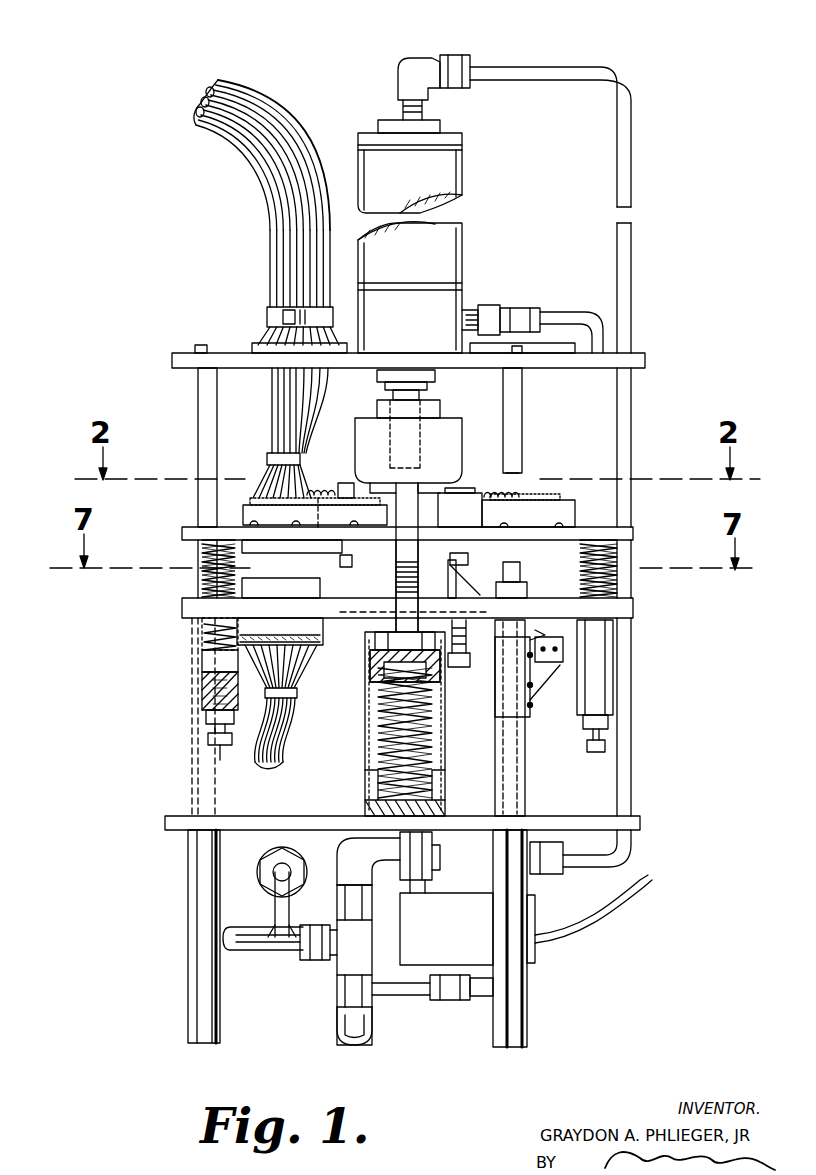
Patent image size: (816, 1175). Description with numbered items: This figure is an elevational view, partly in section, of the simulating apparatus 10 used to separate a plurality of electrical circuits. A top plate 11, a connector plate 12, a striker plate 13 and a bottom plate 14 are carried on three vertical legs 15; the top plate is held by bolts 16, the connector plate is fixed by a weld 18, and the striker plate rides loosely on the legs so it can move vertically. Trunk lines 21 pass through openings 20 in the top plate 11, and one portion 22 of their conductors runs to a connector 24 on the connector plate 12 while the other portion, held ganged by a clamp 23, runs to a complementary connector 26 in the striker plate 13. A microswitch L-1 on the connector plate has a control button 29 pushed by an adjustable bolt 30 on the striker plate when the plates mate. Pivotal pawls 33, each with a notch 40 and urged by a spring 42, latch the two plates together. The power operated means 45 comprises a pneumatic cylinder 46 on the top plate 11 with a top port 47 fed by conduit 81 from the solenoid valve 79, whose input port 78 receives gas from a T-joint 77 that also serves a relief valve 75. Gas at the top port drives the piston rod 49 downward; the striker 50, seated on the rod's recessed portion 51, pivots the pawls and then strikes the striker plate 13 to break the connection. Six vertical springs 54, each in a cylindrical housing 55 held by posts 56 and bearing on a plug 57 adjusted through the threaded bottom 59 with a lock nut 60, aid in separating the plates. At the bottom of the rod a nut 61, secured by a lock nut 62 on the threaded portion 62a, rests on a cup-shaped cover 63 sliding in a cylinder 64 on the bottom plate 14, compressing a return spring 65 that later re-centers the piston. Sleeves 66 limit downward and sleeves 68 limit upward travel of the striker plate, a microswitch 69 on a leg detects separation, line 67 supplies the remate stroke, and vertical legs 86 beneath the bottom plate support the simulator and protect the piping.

The simulating apparatus 10 is at (702, 351).
The top plate 11 is at (172, 360).
The connector plate 12 is at (182, 533).
The striker plate 13 is at (182, 608).
The bottom plate 14 is at (165, 824).
The vertical legs 15 is at (198, 436).
The bolts 16 is at (199, 347).
The weld 18 is at (245, 524).
The openings 20 is at (258, 340).
The trunk lines 21 is at (270, 242).
The portion of the conductors 22 is at (296, 400).
The clamp 23 is at (270, 310).
The connector 24 is at (244, 502).
The complementary connector 26 is at (318, 642).
The control button 29 is at (465, 566).
The adjustable bolt 30 is at (466, 658).
The pivotal pawls 33 is at (340, 567).
The notch 40 is at (404, 574).
The spring 42 is at (318, 486).
The power operated means 45 is at (500, 178).
The pneumatic cylinder 46 is at (466, 143).
The top port 47 is at (400, 75).
The piston rod 49 is at (424, 394).
The striker 50 is at (444, 432).
The recessed portion 51 is at (372, 490).
The microswitch L-1 is at (455, 500).
The vertical springs 54 is at (205, 580).
The cylindrical housing 55 is at (205, 642).
The posts 56 is at (205, 542).
The plug 57 is at (205, 666).
The bottom of the cylindrical housing 59 is at (205, 702).
The lock nut 60 is at (205, 730).
The nut 61 is at (414, 630).
The lock nut 62 is at (432, 692).
The threaded portion 62a is at (412, 578).
The cup-shaped cover 63 is at (366, 694).
The cylinder 64 is at (365, 778).
The return spring 65 is at (433, 755).
The sleeves 66 is at (512, 764).
The line 67 is at (562, 313).
The sleeves 68 is at (528, 590).
The microswitch 69 is at (556, 664).
The relief valve 75 is at (288, 860).
The T-joint 77 is at (342, 965).
The input port 78 is at (400, 868).
The solenoid valve 79 is at (478, 985).
The conduit 81 is at (637, 130).
The vertical legs 86 is at (188, 968).